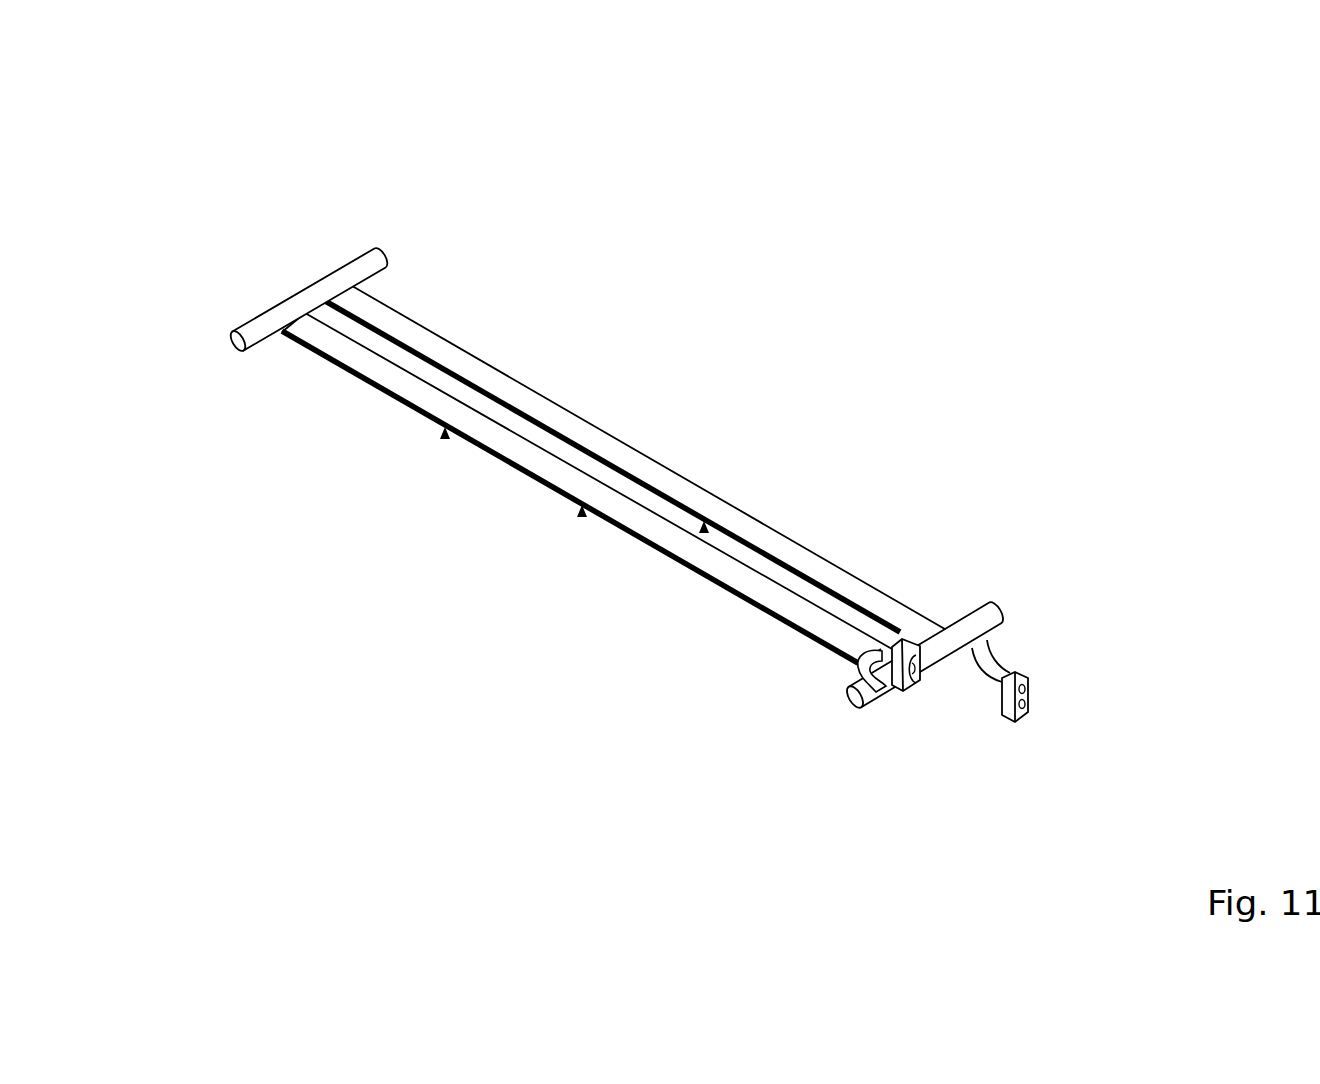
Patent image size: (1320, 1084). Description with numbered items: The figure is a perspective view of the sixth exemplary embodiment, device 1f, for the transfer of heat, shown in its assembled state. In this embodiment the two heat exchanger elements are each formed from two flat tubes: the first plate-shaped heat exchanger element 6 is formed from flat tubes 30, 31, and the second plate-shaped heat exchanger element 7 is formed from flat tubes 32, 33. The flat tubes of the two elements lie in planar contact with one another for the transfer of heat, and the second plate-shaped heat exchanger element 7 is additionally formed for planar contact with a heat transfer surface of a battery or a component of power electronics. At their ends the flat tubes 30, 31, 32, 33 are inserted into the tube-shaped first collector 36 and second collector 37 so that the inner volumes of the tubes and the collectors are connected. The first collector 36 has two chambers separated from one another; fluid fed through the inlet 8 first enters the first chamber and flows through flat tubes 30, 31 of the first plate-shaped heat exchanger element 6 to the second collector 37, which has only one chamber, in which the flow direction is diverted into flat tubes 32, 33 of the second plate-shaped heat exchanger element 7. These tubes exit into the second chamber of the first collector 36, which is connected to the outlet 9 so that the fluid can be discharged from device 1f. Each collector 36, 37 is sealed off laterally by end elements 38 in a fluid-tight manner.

The device 1f is at (994, 186).
The first plate-shaped heat exchanger element 6 is at (447, 330).
The second plate-shaped heat exchanger element 7 is at (444, 438).
The inlet 8 is at (907, 642).
The outlet 9 is at (1015, 728).
The flat tube 30 is at (600, 430).
The flat tube 31 is at (587, 480).
The flat tube 32 is at (704, 530).
The flat tube 33 is at (582, 518).
The first collector 36 is at (1003, 613).
The second collector 37 is at (290, 286).
The end element 38 is at (230, 343).